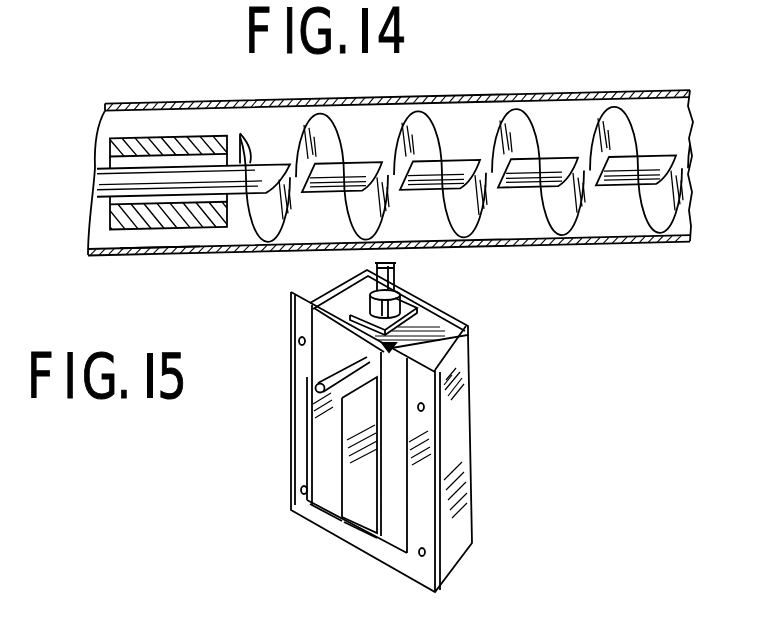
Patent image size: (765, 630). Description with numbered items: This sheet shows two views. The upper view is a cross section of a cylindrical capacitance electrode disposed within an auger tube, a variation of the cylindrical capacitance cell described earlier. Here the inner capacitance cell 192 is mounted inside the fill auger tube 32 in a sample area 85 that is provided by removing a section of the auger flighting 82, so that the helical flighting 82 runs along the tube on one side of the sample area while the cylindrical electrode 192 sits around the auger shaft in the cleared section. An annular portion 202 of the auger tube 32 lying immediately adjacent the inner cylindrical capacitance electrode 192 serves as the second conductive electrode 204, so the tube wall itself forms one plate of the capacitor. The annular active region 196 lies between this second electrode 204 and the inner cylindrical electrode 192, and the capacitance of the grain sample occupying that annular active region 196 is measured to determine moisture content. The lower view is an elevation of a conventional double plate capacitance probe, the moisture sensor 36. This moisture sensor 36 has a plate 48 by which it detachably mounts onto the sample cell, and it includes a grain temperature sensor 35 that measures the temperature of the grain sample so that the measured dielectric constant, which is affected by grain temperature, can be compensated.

In FIG. 14, the fill auger tube 32 is at (495, 100).
In FIG. 14, the auger flighting 82 is at (245, 151).
In FIG. 14, the sample area 85 is at (106, 247).
In FIG. 14, the inner capacitance cell 192 is at (136, 148).
In FIG. 14, the annular active region 196 is at (186, 236).
In FIG. 14, the annular portion 202 is at (152, 253).
In FIG. 14, the second conductive electrode 204 is at (115, 250).
In FIG. 15, the grain temperature sensor 35 is at (386, 349).
In FIG. 15, the plate 48 is at (362, 416).
In FIG. 15, the moisture sensor 36 is at (486, 485).